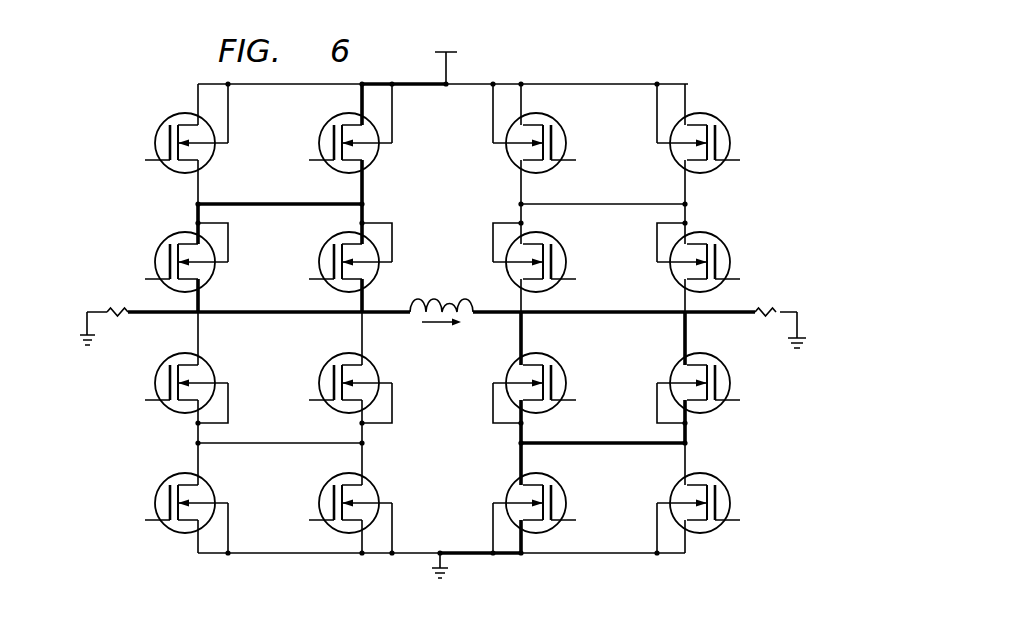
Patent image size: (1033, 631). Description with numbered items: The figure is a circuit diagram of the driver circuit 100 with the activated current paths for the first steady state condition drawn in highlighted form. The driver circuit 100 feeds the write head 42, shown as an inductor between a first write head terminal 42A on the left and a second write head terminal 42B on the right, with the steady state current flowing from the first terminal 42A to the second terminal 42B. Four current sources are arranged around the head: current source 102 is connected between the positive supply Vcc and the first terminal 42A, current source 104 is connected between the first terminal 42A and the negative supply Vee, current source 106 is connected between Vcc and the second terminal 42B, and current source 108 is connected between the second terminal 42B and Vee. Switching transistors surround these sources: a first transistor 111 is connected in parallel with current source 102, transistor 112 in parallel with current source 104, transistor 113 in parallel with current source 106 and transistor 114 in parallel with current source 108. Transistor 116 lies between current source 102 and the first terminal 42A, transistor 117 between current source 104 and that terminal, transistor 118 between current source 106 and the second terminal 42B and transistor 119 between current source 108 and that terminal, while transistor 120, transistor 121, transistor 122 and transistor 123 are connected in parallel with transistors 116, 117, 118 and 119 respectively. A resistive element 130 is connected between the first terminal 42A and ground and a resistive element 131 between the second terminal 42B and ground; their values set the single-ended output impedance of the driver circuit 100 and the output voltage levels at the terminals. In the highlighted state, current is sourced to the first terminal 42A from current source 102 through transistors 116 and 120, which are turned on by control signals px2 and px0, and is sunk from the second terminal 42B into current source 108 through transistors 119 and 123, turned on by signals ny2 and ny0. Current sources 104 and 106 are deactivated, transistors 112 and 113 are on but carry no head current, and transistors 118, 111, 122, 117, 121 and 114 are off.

The driver circuit 100 is at (692, 54).
The write head 42 is at (448, 298).
The first write head terminal 42A is at (388, 314).
The second write head terminal 42B is at (495, 314).
The resistive element 130 is at (122, 320).
The resistive element 131 is at (763, 320).
The first transistor 111 is at (162, 124).
The current source 102 is at (326, 124).
The current source 106 is at (561, 124).
The transistor 113 is at (725, 124).
The transistor 120 is at (161, 243).
The transistor 116 is at (325, 243).
The transistor 118 is at (561, 243).
The transistor 122 is at (725, 243).
The transistor 121 is at (211, 369).
The transistor 117 is at (326, 358).
The transistor 119 is at (559, 360).
The transistor 123 is at (676, 370).
The transistor 112 is at (161, 484).
The current source 104 is at (325, 484).
The current source 108 is at (561, 484).
The transistor 114 is at (725, 484).